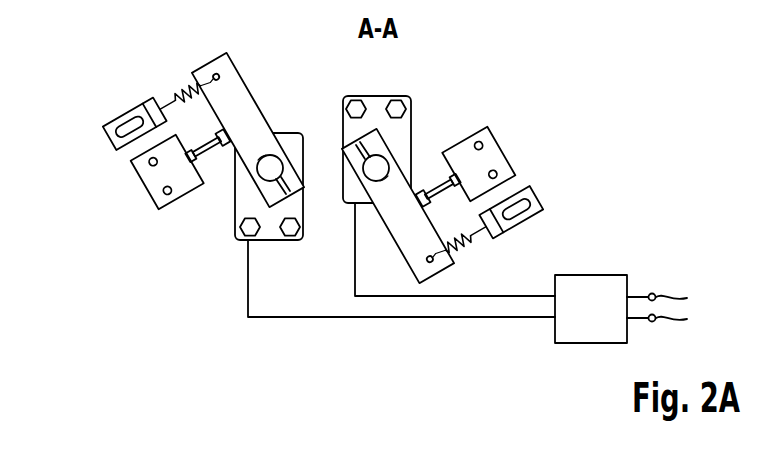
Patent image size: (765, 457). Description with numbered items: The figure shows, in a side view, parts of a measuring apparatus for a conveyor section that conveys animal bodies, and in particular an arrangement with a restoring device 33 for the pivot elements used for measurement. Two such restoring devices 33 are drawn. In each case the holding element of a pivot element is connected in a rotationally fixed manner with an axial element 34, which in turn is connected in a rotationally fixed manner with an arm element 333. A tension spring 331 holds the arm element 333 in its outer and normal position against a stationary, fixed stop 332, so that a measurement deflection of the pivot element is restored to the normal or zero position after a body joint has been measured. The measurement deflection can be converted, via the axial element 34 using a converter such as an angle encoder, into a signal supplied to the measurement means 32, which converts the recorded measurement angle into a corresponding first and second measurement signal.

The restoring device 33 is at (97, 173).
The tension spring 331 is at (180, 92).
The stationary, fixed stop 332 is at (217, 158).
The arm element 333 is at (241, 94).
The axial element 34 is at (366, 187).
The measurement means 32 is at (595, 275).